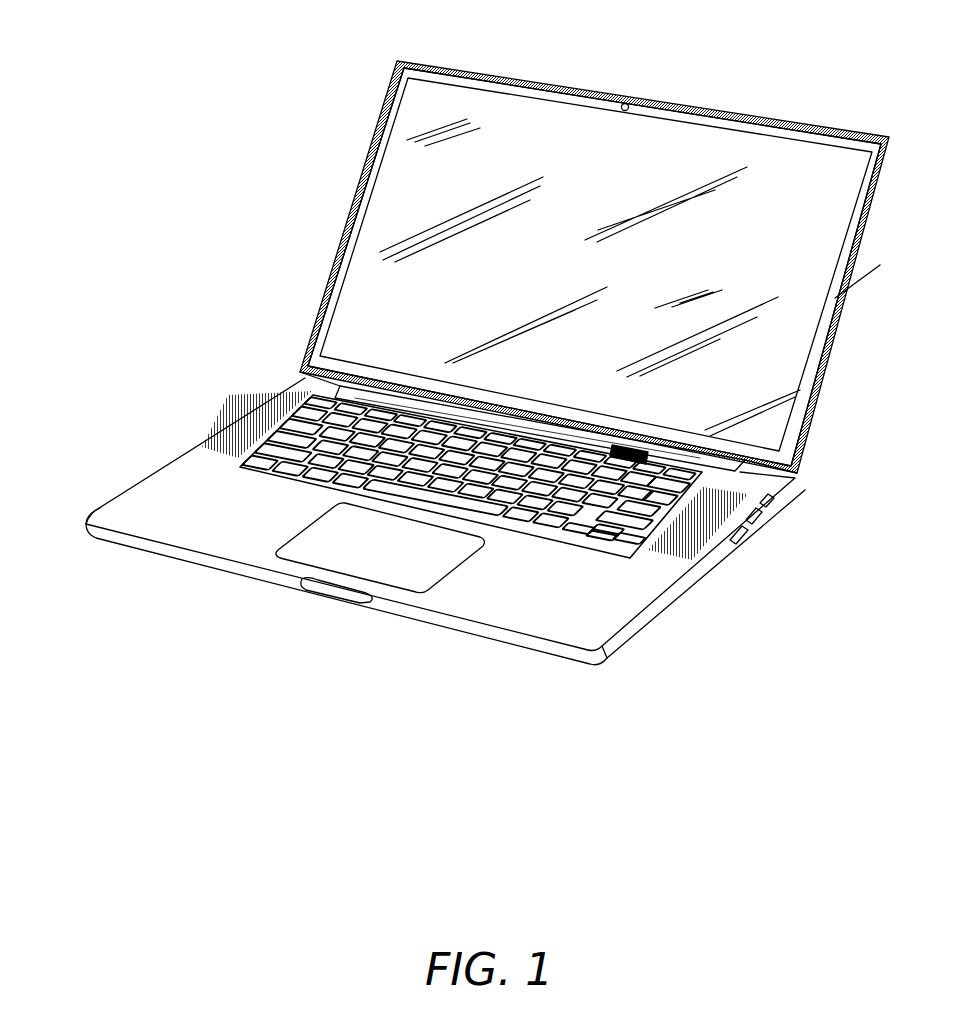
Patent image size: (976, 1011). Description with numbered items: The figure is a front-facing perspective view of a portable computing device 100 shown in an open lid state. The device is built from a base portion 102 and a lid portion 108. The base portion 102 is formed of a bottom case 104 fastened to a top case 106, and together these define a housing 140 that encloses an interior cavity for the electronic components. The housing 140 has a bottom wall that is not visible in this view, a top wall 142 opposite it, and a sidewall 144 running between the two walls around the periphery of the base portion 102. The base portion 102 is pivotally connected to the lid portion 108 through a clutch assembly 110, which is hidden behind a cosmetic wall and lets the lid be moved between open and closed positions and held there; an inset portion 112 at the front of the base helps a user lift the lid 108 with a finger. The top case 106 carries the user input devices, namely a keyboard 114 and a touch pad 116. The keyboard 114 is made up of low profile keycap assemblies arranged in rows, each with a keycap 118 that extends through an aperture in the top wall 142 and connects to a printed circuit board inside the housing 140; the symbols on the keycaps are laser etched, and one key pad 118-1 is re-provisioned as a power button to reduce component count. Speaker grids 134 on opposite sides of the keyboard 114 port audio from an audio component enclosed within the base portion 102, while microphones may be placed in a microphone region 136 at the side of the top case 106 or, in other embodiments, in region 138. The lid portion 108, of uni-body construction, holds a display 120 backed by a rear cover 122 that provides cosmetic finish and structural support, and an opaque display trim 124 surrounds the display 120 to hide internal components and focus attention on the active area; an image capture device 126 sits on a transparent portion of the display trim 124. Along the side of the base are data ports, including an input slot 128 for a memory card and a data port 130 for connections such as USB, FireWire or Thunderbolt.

The computing device 100 is at (247, 82).
The base portion 102 is at (703, 583).
The bottom case 104 is at (668, 608).
The top case 106 is at (237, 534).
The lid portion 108 is at (368, 110).
The clutch assembly 110 is at (372, 378).
The inset portion 112 is at (322, 590).
The keyboard 114 is at (232, 472).
The touch pad 116 is at (392, 559).
The keycap 118 is at (270, 392).
The key pad 118-1 is at (745, 483).
The display 120 is at (578, 276).
The rear cover 122 is at (850, 345).
The display trim 124 is at (366, 183).
The image capture device 126 is at (625, 102).
The input slot 128 is at (740, 538).
The data port 130 is at (752, 518).
The speaker grids 134 is at (660, 560).
The microphone region 136 is at (212, 458).
The region 138 is at (490, 425).
The housing 140 is at (190, 437).
The top wall 142 is at (100, 512).
The sidewall 144 is at (553, 647).